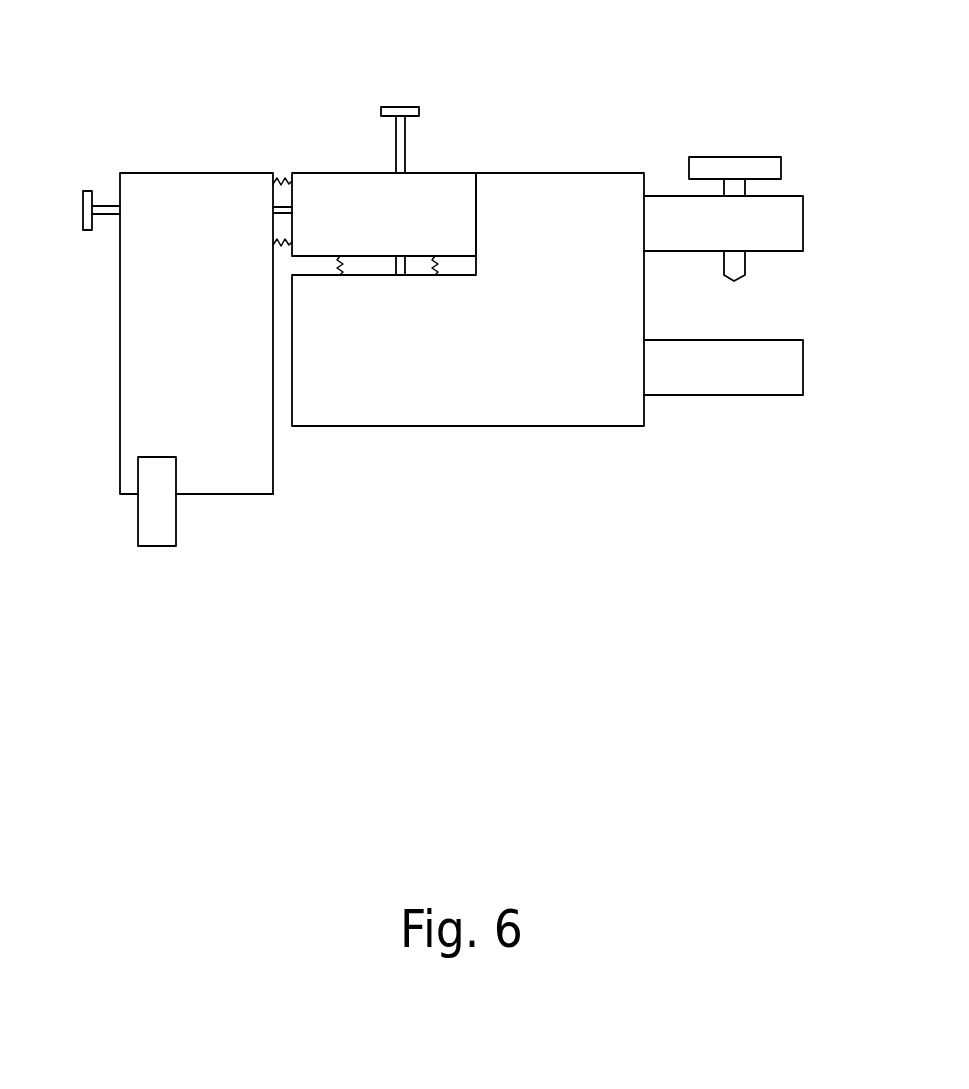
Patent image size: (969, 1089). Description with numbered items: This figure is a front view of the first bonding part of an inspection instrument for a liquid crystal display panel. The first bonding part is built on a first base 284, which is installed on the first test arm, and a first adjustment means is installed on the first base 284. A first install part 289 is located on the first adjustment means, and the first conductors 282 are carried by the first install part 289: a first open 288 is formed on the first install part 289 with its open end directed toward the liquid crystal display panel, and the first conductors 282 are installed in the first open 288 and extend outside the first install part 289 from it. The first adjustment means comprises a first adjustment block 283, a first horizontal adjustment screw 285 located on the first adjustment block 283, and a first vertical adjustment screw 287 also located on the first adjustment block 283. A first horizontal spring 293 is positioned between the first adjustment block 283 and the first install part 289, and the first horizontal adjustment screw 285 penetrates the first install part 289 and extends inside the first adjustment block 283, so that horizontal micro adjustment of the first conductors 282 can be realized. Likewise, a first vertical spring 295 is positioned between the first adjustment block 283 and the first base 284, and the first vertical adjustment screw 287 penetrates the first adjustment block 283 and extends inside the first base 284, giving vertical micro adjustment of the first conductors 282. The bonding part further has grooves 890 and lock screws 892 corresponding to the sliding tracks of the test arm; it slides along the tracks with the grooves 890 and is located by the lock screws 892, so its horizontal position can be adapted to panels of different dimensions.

The first conductors 282 is at (157, 518).
The first adjustment block 283 is at (415, 197).
The first base 284 is at (452, 376).
The first horizontal adjustment screw 285 is at (86, 211).
The first vertical adjustment screw 287 is at (405, 110).
The first open 288 is at (176, 477).
The first install part 289 is at (200, 226).
The first horizontal spring 293 is at (283, 180).
The first vertical spring 295 is at (340, 275).
The grooves 890 is at (757, 313).
The lock screws 892 is at (727, 167).